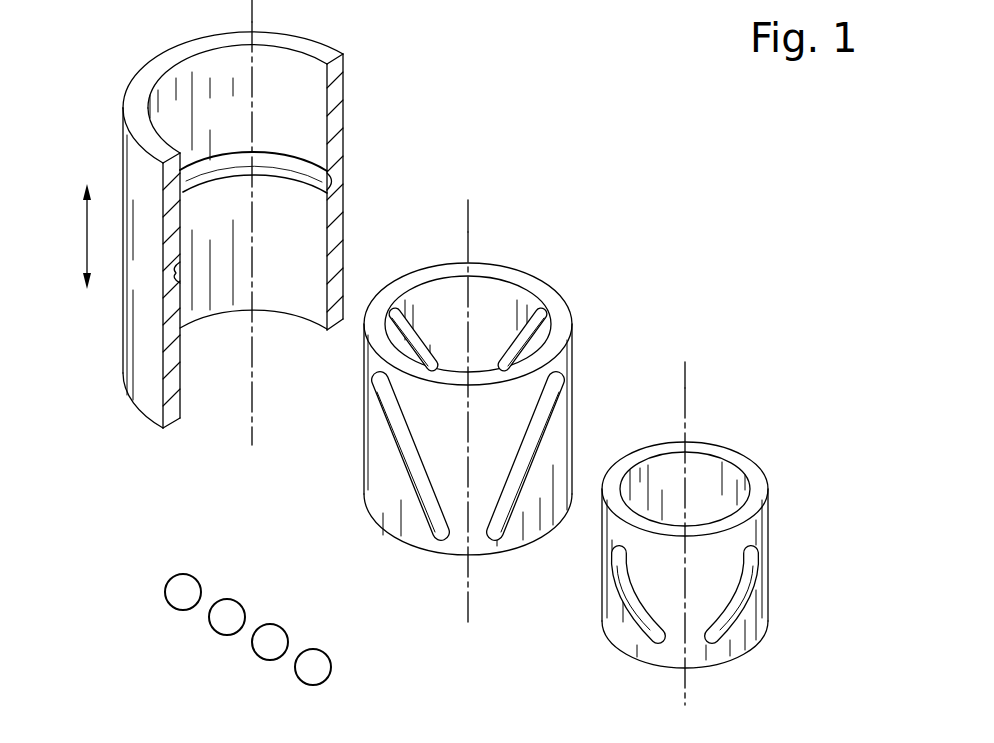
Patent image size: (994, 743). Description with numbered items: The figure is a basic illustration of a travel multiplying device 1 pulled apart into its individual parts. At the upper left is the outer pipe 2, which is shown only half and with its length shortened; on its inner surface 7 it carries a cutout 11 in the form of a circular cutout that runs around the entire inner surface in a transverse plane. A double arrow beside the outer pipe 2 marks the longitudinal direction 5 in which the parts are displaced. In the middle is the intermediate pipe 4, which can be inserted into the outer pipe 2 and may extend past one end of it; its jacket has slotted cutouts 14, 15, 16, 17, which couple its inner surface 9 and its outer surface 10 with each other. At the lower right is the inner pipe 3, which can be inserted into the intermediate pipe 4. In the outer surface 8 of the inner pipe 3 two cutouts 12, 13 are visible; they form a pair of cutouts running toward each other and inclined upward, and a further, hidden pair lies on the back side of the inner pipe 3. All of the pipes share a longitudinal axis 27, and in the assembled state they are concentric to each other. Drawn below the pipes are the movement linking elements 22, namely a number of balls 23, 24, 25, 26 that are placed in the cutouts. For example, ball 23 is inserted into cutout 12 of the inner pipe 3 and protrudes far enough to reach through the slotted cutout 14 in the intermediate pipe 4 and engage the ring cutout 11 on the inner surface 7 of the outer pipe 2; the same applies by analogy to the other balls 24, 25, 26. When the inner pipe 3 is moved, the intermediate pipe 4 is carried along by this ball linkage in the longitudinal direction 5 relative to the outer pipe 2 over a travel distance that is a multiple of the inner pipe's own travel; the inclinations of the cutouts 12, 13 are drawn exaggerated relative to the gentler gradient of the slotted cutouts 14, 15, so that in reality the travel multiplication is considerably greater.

The travel multiplying device 1 is at (583, 37).
The outer pipe 2 is at (143, 22).
The inner pipe 3 is at (778, 400).
The intermediate pipe 4 is at (556, 232).
The longitudinal direction 5 is at (85, 232).
The inner surface 7 is at (285, 105).
The outer surface 8 is at (757, 618).
The inner surface 9 is at (447, 290).
The outer surface 10 is at (560, 470).
The cutout 11 is at (323, 192).
The cutout 12 is at (622, 578).
The cutout 13 is at (770, 563).
The slotted cutout 14 is at (393, 438).
The slotted cutout 15 is at (574, 397).
The slotted cutout 16 is at (407, 303).
The slotted cutout 17 is at (542, 310).
The movement linking elements 22 is at (175, 668).
The ball 23 is at (183, 592).
The ball 24 is at (227, 617).
The ball 25 is at (270, 642).
The ball 26 is at (313, 667).
The longitudinal axis 27 is at (252, 427).